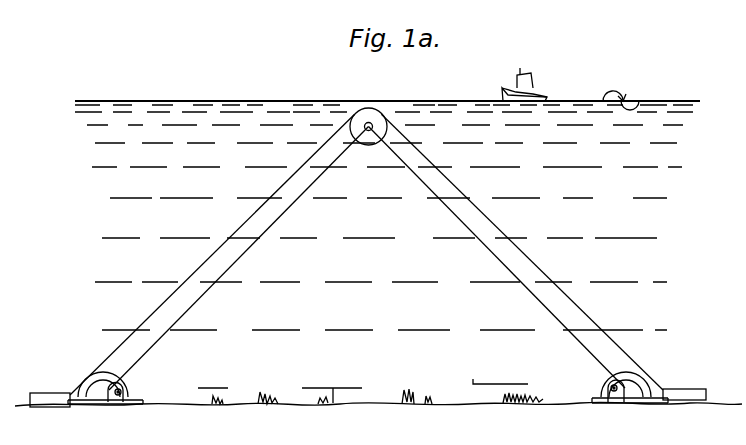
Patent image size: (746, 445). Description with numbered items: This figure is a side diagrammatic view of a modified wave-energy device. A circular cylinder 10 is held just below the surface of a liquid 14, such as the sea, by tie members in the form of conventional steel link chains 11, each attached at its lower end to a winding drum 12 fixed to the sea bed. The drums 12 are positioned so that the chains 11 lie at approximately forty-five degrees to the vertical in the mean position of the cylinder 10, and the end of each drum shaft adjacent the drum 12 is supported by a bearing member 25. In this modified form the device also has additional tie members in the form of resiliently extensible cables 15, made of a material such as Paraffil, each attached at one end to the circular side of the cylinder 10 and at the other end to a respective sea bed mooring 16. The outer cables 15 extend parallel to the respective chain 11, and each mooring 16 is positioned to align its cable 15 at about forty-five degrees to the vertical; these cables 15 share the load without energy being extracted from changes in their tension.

The circular cylinder 10 is at (378, 120).
The steel link chain 11 is at (241, 256).
The winding drum 12 is at (108, 388).
The liquid 14 is at (267, 118).
The resiliently extensible cable 15 is at (208, 253).
The sea bed mooring 16 is at (40, 393).
The bearing member 25 is at (125, 395).